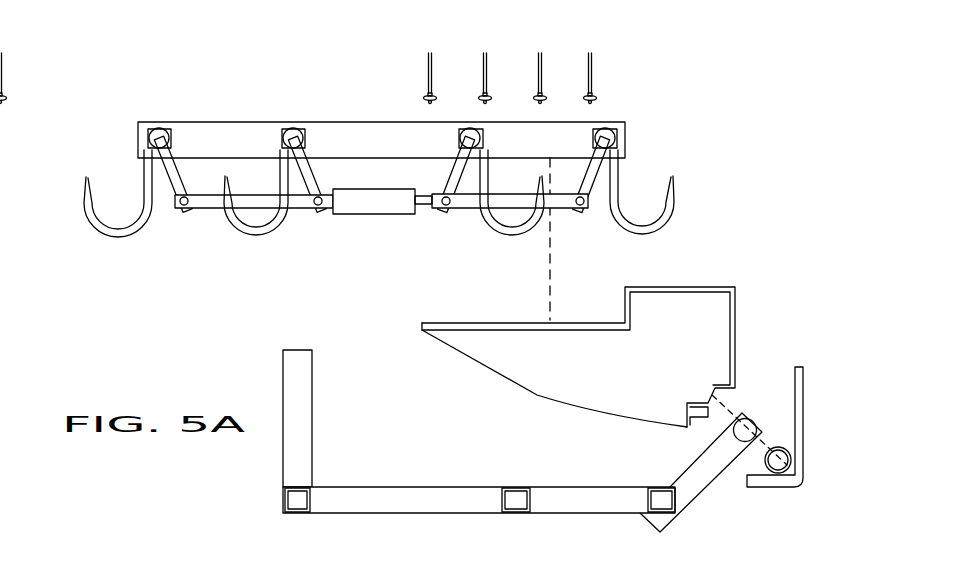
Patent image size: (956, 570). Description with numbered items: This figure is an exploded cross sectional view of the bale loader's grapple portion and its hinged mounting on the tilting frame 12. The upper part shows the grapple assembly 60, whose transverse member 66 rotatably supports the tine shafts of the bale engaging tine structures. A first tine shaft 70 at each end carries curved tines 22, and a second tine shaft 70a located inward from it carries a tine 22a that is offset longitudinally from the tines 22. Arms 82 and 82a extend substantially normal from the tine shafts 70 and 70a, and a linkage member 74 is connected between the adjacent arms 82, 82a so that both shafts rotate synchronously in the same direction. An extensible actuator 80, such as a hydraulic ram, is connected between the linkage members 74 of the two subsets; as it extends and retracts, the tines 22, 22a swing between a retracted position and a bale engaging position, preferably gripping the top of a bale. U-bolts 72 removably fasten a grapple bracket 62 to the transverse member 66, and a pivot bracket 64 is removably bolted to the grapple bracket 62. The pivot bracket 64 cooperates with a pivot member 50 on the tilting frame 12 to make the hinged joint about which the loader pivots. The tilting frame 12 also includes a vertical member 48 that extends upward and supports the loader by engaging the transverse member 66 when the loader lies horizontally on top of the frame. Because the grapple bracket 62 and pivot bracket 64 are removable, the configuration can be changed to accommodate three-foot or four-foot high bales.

The tilting frame 12 is at (423, 487).
The tine 22 is at (100, 235).
The tine 22a is at (242, 234).
The vertical member 48 is at (312, 420).
The pivot member 50 is at (745, 415).
The grapple assembly 60 is at (357, 160).
The grapple bracket 62 is at (735, 328).
The pivot bracket 64 is at (803, 437).
The transverse member 66 is at (385, 122).
The tine shaft 70 is at (158, 128).
The second tine shaft 70a is at (291, 128).
The U-bolt 72 is at (487, 72).
The linkage member 74 is at (297, 210).
The extensible actuator 80 is at (365, 214).
The arm 82 is at (182, 176).
The arm 82a is at (313, 167).